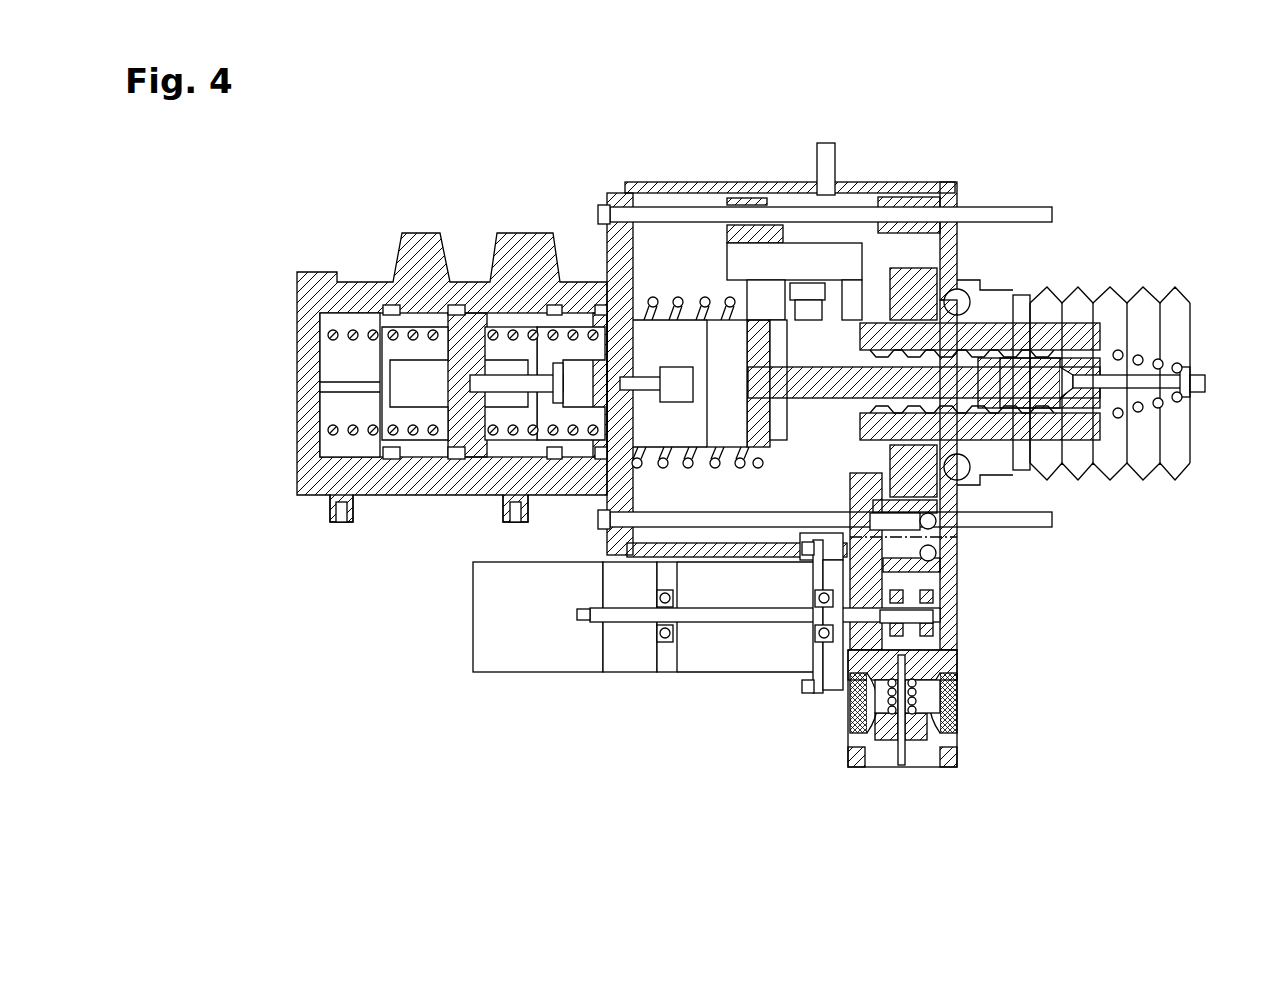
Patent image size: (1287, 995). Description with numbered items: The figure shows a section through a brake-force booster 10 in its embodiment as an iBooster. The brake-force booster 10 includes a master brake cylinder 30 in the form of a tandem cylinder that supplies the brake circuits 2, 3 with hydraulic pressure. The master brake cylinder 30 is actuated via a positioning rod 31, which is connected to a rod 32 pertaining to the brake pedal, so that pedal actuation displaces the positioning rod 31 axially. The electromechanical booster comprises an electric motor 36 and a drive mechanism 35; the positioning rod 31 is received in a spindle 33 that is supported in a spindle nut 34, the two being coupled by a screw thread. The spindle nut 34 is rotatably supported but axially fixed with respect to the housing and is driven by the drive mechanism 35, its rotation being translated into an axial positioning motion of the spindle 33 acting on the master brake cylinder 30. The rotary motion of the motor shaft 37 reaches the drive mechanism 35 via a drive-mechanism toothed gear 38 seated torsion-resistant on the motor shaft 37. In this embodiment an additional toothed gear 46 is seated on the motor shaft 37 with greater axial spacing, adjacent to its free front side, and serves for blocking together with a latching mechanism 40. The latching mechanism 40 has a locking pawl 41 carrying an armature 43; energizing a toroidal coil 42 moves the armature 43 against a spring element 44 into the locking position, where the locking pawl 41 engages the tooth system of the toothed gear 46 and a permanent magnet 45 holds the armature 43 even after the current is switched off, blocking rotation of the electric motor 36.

The brake-force booster 10 is at (580, 178).
The master brake cylinder 30 is at (318, 272).
The brake circuit 2 is at (330, 519).
The brake circuit 3 is at (503, 519).
The positioning rod 31 is at (932, 377).
The rod 32 is at (1205, 385).
The spindle 33 is at (967, 410).
The spindle nut 34 is at (1093, 440).
The drive mechanism 35 is at (965, 560).
The electric motor 36 is at (545, 672).
The motor shaft 37 is at (705, 625).
The drive-mechanism toothed gear 38 is at (873, 627).
The latching mechanism 40 is at (896, 745).
The locking pawl 41 is at (900, 755).
The toroidal coil 42 is at (957, 712).
The armature 43 is at (925, 740).
The spring element 44 is at (890, 707).
The permanent magnet 45 is at (940, 673).
The additional toothed gear 46 is at (920, 633).